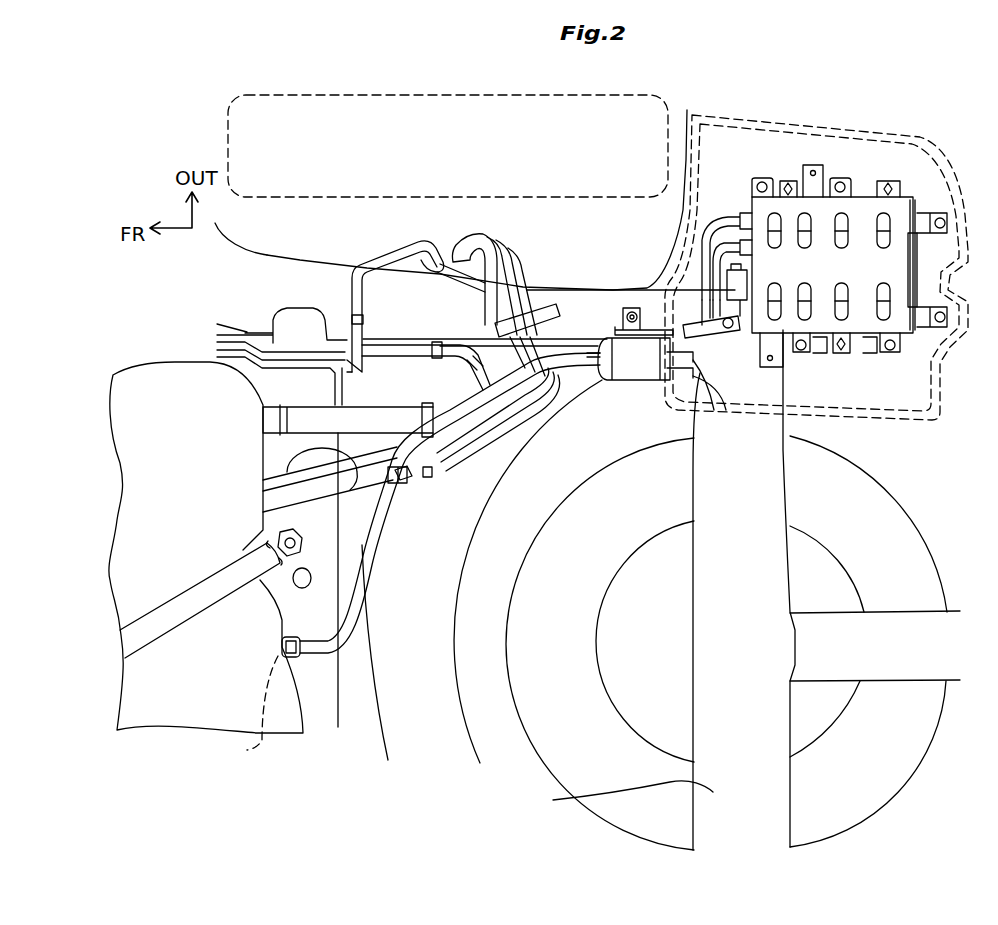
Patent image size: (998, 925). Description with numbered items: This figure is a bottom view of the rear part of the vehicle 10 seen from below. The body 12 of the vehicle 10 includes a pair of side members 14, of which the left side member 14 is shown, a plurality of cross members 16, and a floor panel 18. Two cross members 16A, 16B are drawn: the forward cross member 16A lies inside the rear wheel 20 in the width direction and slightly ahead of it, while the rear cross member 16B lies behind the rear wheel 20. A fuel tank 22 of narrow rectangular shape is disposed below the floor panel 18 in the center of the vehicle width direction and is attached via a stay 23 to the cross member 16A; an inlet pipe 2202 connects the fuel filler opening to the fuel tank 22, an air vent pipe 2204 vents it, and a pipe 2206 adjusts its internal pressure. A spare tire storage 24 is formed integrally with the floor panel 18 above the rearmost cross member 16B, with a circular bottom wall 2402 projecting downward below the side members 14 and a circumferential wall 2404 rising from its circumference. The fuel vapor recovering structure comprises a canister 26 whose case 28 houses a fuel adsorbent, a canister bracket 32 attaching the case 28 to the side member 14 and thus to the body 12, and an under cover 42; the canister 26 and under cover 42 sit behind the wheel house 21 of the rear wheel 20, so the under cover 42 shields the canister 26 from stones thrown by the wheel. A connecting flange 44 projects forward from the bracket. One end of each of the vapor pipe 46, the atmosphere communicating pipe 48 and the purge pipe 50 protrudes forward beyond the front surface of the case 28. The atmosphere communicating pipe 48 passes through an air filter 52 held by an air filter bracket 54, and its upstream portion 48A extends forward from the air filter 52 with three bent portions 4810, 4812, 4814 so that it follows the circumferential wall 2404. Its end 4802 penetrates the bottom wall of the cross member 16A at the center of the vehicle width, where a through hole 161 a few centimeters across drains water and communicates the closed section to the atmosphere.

The vehicle 10 is at (109, 86).
The body 12 is at (135, 105).
The side member 14 is at (591, 300).
The cross member 16 is at (510, 624).
The cross member 16A is at (307, 678).
The cross member 16B is at (587, 798).
The floor panel 18 is at (410, 362).
The rear wheel 20 is at (228, 114).
The wheel house 21 is at (548, 224).
The fuel tank 22 is at (175, 362).
The stay 23 is at (177, 597).
The spare tire storage 24 is at (707, 590).
The canister 26 is at (849, 251).
The case 28 is at (849, 251).
The canister bracket 32 is at (860, 267).
The under cover 42 is at (917, 140).
The connecting flange 44 is at (738, 342).
The vapor pipe 46 is at (730, 217).
The atmosphere communicating pipe 48 is at (467, 505).
The upstream portion 48A is at (367, 562).
The purge pipe 50 is at (730, 247).
The air filter 52 is at (640, 378).
The air filter bracket 54 is at (650, 310).
The through hole 161 is at (313, 578).
The inlet pipe 2202 is at (380, 410).
The air vent pipe 2204 is at (263, 468).
The pipe 2206 is at (400, 485).
The bottom wall 2402 is at (648, 708).
The circumferential wall 2404 is at (505, 470).
The end 4802 is at (247, 751).
The bent portion 4810 is at (557, 362).
The bent portion 4812 is at (425, 482).
The bent portion 4814 is at (330, 647).